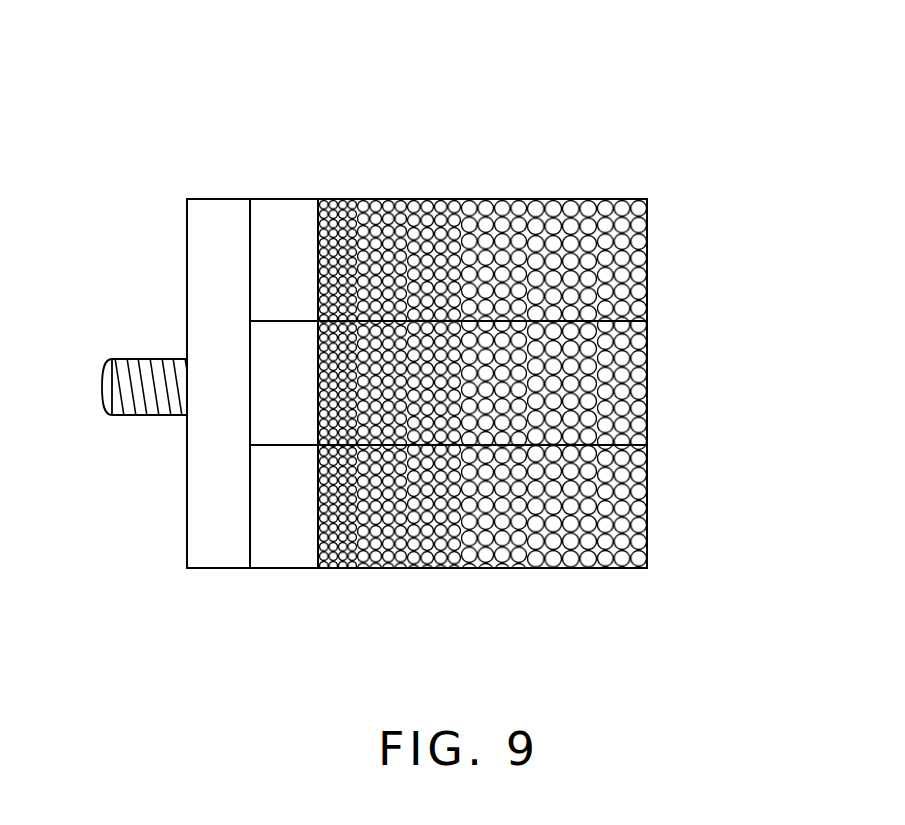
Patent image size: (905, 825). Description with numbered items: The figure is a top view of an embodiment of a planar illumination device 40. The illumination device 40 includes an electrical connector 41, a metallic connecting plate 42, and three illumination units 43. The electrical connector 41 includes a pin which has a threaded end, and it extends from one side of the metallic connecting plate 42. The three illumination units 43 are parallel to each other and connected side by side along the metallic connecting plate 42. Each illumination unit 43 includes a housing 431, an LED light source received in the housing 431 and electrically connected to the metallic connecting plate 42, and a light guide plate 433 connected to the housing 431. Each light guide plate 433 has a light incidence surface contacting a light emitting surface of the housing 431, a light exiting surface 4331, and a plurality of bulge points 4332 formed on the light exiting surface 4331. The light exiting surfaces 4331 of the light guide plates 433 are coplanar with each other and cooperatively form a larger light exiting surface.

The illumination device 40 is at (464, 26).
The electrical connector 41 is at (149, 375).
The metallic connecting plate 42 is at (210, 538).
The illumination units 43 is at (397, 108).
The housing 431 is at (289, 214).
The light guide plate 433 is at (422, 200).
The light exiting surface 4331 is at (649, 251).
The bulge points 4332 is at (493, 230).